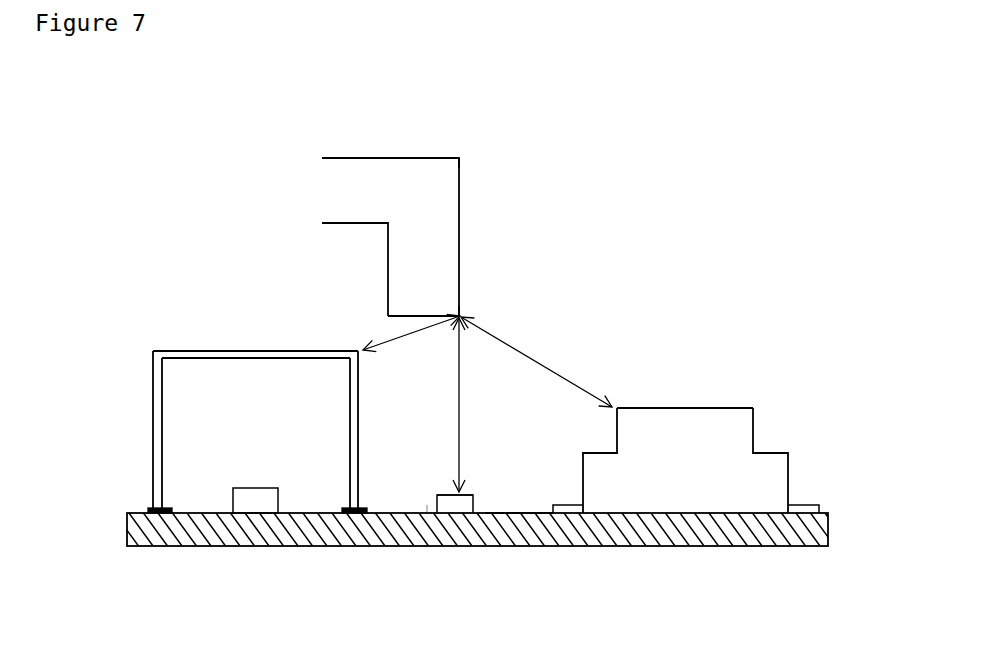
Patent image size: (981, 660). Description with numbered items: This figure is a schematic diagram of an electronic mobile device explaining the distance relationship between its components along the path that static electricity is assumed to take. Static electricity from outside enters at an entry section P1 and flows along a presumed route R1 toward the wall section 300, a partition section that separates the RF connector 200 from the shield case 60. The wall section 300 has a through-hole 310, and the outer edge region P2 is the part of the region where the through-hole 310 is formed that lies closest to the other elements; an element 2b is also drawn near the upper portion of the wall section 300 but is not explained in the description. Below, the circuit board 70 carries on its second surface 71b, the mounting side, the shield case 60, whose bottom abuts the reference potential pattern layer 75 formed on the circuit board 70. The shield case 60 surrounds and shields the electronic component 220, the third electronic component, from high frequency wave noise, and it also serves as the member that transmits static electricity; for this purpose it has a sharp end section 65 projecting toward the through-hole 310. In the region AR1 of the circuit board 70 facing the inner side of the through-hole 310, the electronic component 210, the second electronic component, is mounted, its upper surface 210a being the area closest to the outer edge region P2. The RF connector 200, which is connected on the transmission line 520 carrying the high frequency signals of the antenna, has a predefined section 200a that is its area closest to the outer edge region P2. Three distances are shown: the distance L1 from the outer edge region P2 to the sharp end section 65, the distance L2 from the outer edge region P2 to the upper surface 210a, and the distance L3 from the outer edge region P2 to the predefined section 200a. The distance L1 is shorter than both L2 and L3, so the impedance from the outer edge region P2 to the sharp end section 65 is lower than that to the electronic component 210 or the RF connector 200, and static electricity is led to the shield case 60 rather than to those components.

The second portion of member 2b is at (352, 172).
The entry section P1 is at (459, 159).
The presumed route R1 is at (459, 222).
The outer edge region P2 is at (460, 316).
The wall section 300 is at (405, 248).
The through-hole 310 is at (387, 320).
The shield case 60 is at (183, 351).
The sharp end section 65 is at (357, 351).
The reference potential pattern layer 75 is at (150, 508).
The electronic component 220 is at (240, 500).
The distance L1 is at (411, 343).
The distance L2 is at (480, 405).
The distance L3 is at (536, 362).
The region AR1 is at (430, 497).
The electronic component 210 is at (457, 513).
The upper surface 210a is at (455, 495).
The second surface 71b is at (530, 500).
The circuit board 70 is at (829, 535).
The RF connector 200 is at (725, 408).
The predefined section 200a is at (617, 408).
The transmission line 520 is at (807, 505).